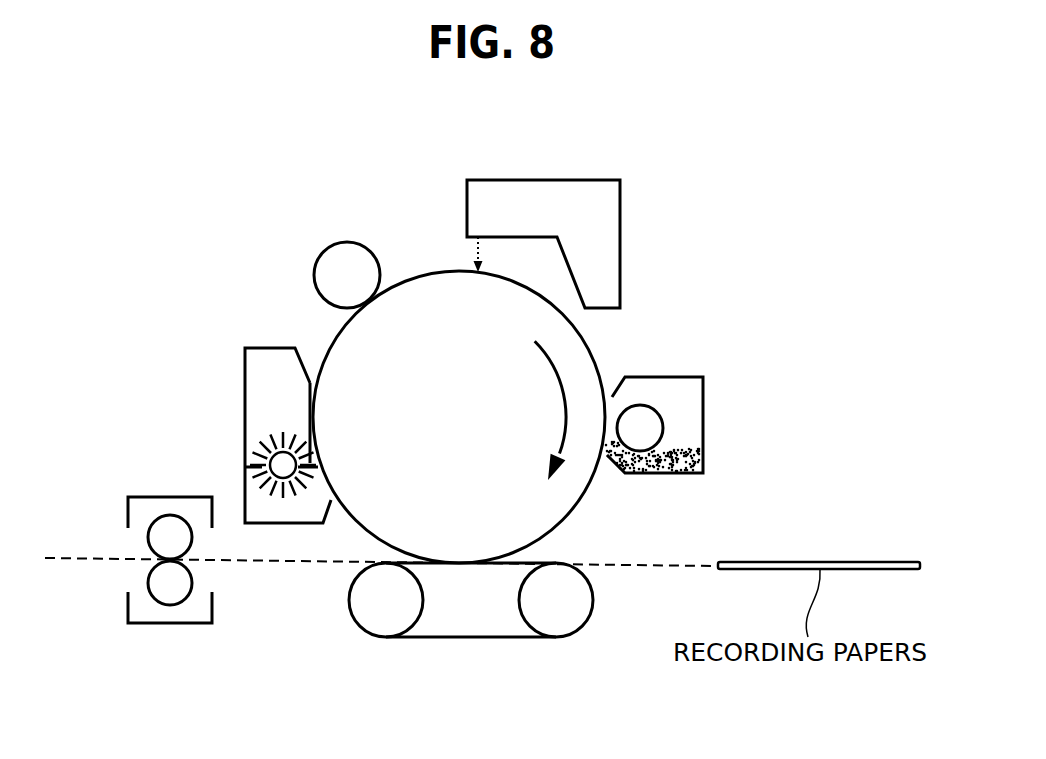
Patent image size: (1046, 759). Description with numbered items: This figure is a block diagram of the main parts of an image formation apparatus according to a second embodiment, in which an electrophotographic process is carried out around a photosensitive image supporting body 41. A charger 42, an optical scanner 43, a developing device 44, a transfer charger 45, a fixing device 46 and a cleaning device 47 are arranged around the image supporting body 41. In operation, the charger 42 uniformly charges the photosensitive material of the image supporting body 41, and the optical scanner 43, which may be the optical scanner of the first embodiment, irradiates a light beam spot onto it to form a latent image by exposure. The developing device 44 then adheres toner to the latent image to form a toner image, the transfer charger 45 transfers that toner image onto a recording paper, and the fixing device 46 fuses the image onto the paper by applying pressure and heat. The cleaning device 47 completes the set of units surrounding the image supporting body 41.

The image supporting body 41 is at (432, 271).
The charger 42 is at (331, 246).
The optical scanner 43 is at (580, 180).
The developing device 44 is at (689, 377).
The transfer charger 45 is at (468, 640).
The fixing device 46 is at (166, 623).
The cleaning device 47 is at (262, 348).